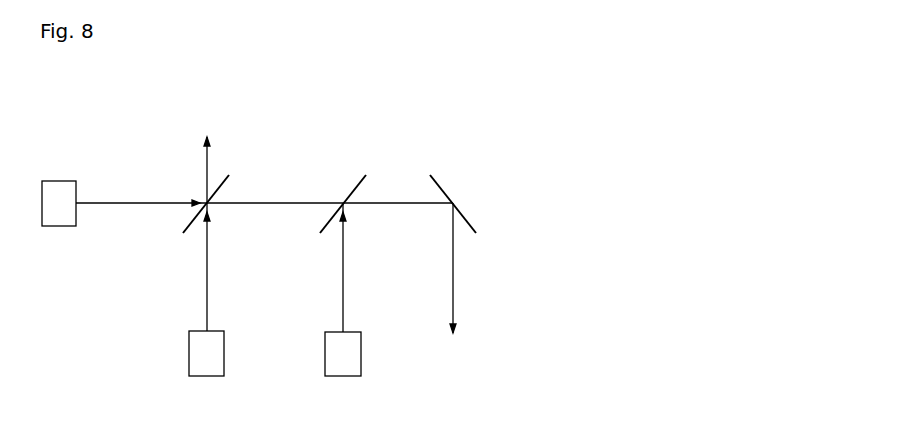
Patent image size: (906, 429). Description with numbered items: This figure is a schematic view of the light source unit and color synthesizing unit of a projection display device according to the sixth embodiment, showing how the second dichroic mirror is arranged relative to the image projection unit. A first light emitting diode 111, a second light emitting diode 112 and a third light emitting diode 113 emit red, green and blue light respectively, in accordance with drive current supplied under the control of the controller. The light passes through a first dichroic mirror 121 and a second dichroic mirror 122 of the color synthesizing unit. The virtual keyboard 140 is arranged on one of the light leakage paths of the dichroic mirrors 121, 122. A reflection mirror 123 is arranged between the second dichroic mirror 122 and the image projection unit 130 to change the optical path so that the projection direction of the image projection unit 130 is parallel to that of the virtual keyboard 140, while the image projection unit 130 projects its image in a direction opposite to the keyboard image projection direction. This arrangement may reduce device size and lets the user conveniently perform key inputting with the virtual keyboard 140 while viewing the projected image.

The first light emitting diode 111 is at (58, 185).
The second light emitting diode 112 is at (206, 376).
The third light emitting diode 113 is at (342, 376).
The first dichroic mirror 121 is at (183, 233).
The second dichroic mirror 122 is at (320, 233).
The reflection mirror 123 is at (443, 187).
The image projection unit 130 is at (461, 360).
The virtual keyboard 140 is at (200, 106).